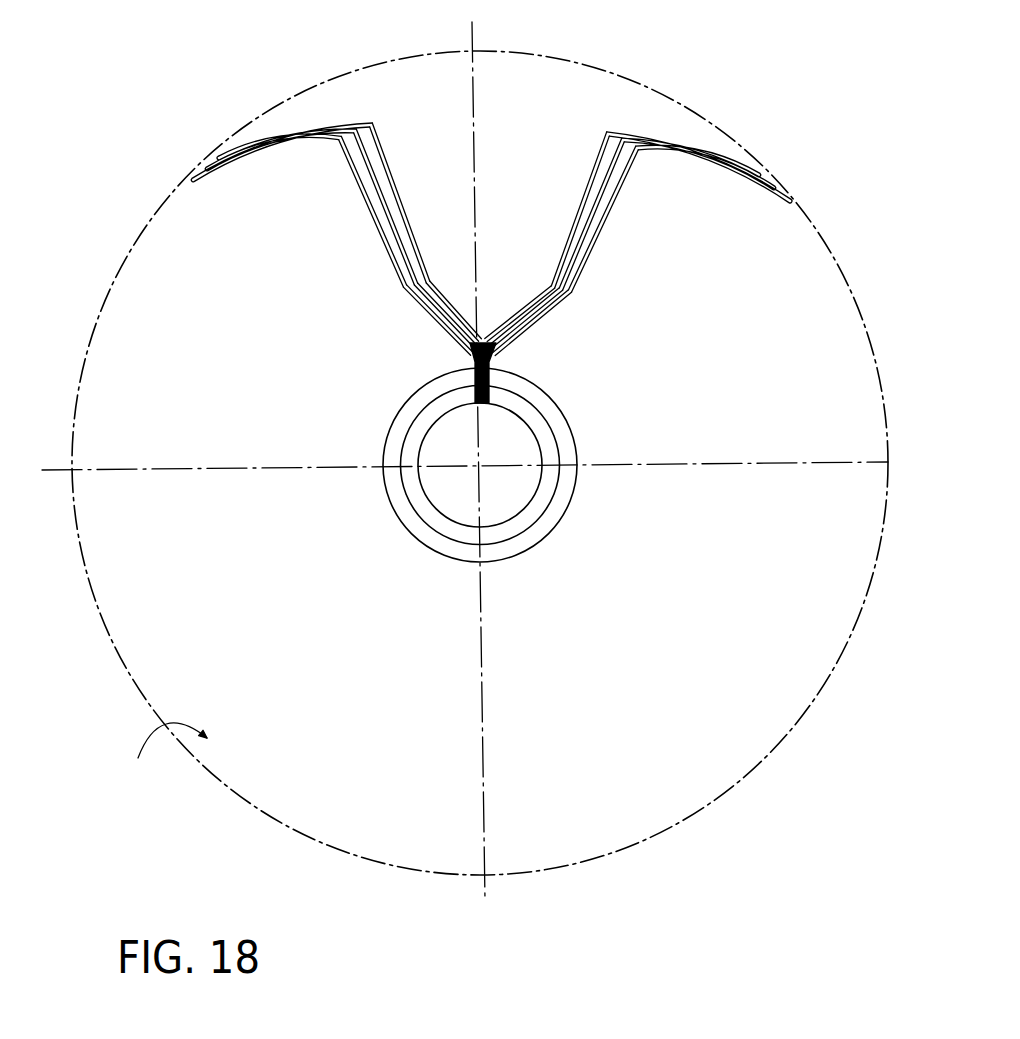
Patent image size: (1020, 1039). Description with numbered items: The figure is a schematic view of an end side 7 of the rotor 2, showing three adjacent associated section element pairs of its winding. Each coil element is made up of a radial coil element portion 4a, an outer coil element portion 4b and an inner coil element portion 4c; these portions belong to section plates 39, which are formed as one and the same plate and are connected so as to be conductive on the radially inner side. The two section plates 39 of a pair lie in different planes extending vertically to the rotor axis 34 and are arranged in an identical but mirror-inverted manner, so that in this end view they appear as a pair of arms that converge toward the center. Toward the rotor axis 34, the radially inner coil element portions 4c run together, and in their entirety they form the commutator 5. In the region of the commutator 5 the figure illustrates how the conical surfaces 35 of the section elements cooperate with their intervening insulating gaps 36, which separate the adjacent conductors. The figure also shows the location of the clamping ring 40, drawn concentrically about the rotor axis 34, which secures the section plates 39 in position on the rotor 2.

The rotor 2 is at (650, 882).
The radial coil element portion 4a is at (387, 168).
The outer coil element portion 4b is at (260, 142).
The inner coil element portion 4c is at (433, 293).
The commutator 5 is at (487, 340).
The end side 7 is at (171, 756).
The rotor axis 34 is at (480, 465).
The conical surfaces 35 is at (414, 300).
The insulating gaps 36 is at (536, 310).
The section plates 39 is at (684, 143).
The clamping ring 40 is at (387, 493).